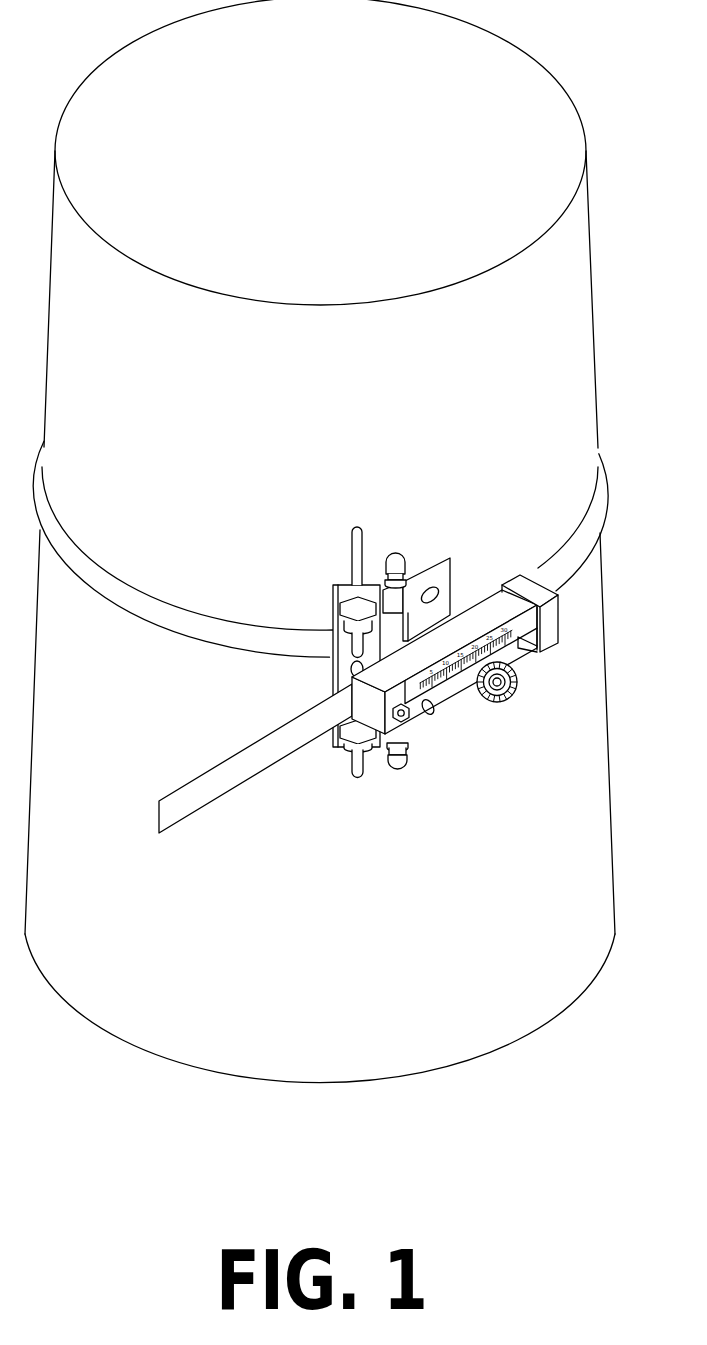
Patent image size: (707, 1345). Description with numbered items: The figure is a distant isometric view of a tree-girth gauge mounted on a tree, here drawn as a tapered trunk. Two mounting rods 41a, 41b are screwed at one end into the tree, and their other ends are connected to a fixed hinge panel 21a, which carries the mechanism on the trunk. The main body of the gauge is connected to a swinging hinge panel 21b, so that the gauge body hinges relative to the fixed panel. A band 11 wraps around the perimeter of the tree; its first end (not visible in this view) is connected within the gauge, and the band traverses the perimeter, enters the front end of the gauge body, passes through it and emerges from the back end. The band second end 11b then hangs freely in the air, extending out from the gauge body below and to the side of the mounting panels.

The band 11 is at (163, 628).
The band second end 11b is at (177, 792).
The fixed hinge panel 21a is at (333, 600).
The swinging hinge panel 21b is at (453, 567).
The mounting rod 41a is at (350, 542).
The mounting rod 41b is at (352, 775).